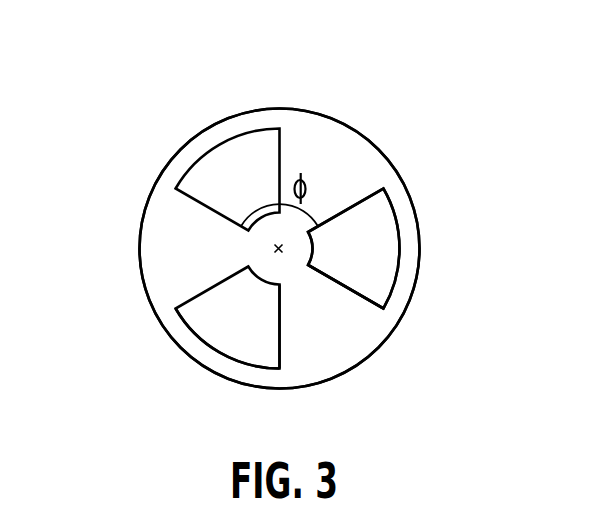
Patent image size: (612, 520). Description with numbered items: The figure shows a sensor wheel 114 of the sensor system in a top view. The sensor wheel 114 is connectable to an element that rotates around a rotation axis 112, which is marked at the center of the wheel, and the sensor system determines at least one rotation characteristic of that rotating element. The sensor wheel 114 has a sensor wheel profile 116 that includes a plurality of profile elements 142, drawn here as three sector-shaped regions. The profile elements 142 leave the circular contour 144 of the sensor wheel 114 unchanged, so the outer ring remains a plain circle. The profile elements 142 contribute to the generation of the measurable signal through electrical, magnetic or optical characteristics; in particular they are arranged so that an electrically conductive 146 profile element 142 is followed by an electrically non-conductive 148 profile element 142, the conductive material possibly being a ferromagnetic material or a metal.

The rotation axis 112 is at (276, 248).
The sensor wheel 114 is at (135, 106).
The sensor wheel profile 116 is at (152, 312).
The profile element 142 is at (288, 249).
The contour 144 is at (370, 139).
The electrically conductive profile element 146 is at (397, 233).
The electrically non-conductive profile element 148 is at (330, 330).